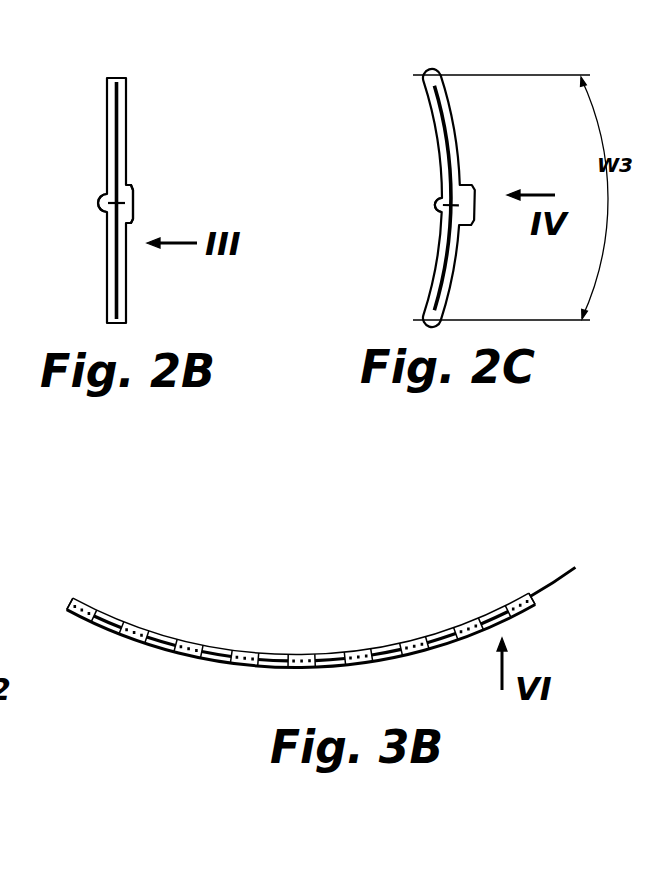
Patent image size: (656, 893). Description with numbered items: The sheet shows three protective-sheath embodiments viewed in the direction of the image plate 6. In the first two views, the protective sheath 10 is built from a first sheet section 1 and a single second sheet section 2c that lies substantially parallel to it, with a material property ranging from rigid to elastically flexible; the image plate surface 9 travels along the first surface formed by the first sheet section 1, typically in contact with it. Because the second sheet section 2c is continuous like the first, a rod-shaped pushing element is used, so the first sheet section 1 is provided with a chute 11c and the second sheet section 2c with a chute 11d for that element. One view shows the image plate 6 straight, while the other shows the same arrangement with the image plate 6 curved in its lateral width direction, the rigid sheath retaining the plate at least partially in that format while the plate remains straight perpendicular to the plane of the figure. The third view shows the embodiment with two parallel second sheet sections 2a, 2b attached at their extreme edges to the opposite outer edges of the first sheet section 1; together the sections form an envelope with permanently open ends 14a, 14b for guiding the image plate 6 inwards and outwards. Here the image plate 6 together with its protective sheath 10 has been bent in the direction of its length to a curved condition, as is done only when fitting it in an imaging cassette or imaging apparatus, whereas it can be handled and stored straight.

In FIG. 2B, the first sheet section 1 is at (107, 280).
In FIG. 2C, the first sheet section 1 is at (436, 266).
In FIG. 3B, the first sheet section 1 is at (350, 652).
In FIG. 3B, the second sheet section 2a is at (301, 664).
In FIG. 3B, the second sheet section 2b is at (196, 660).
In FIG. 2B, the single second sheet section 2c is at (126, 135).
In FIG. 2C, the single second sheet section 2c is at (455, 262).
In FIG. 3B, the image plate 6 is at (548, 586).
In FIG. 2C, the image plate surface 9 is at (436, 158).
In FIG. 3B, the image plate surface 9 is at (558, 568).
In FIG. 2B, the protective sheath 10 is at (134, 99).
In FIG. 2C, the protective sheath 10 is at (460, 121).
In FIG. 3B, the protective sheath 10 is at (171, 630).
In FIG. 2B, the chute 11c is at (99, 205).
In FIG. 2C, the chute 11c is at (436, 208).
In FIG. 2B, the chute 11d is at (133, 200).
In FIG. 3B, the open end 14a is at (82, 589).
In FIG. 3B, the open end 14b is at (522, 591).